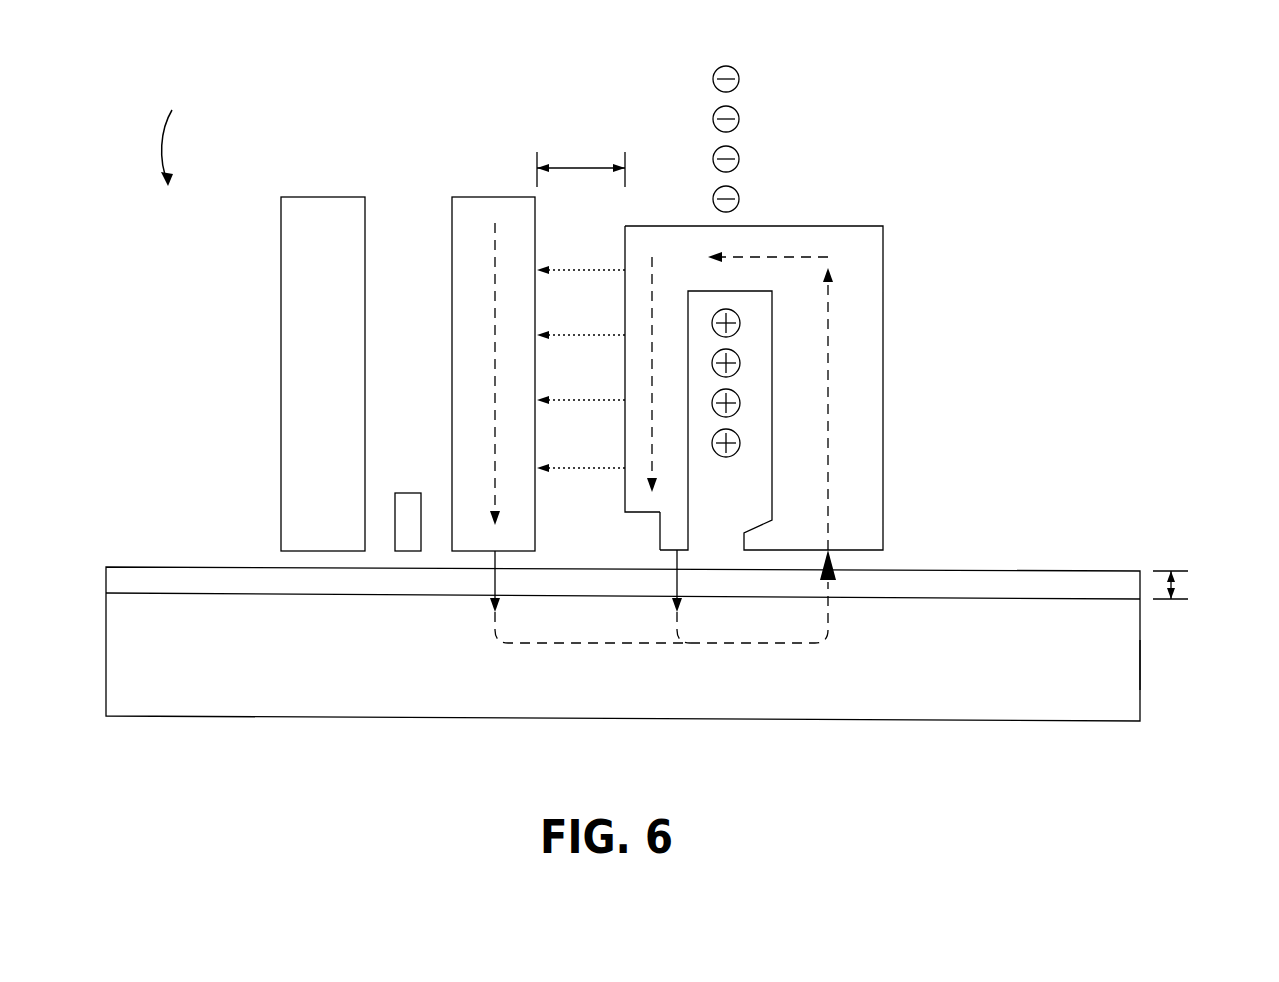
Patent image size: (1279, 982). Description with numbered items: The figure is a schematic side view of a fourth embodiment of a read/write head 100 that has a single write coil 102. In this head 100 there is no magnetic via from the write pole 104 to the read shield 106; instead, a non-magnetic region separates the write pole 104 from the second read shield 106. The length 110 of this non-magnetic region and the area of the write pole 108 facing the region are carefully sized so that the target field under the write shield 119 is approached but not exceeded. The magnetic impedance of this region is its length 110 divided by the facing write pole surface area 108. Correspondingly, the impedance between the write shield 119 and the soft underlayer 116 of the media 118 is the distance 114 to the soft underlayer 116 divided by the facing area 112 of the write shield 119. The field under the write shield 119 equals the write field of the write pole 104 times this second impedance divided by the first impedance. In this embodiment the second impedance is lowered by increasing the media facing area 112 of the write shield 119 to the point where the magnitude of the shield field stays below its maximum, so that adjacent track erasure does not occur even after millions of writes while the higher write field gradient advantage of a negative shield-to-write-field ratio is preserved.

The head 100 is at (189, 132).
The write coil 102 is at (730, 68).
The write pole 104 is at (668, 530).
The read shield 106 is at (488, 196).
The write pole area facing the non-magnetic region 108 is at (622, 488).
The length of the non-magnetic region 110 is at (580, 158).
The media facing area of the write shield 112 is at (845, 553).
The distance to the soft underlayer 114 is at (1187, 580).
The soft underlayer 116 is at (1052, 687).
The media 118 is at (1156, 664).
The write shield 119 is at (865, 326).